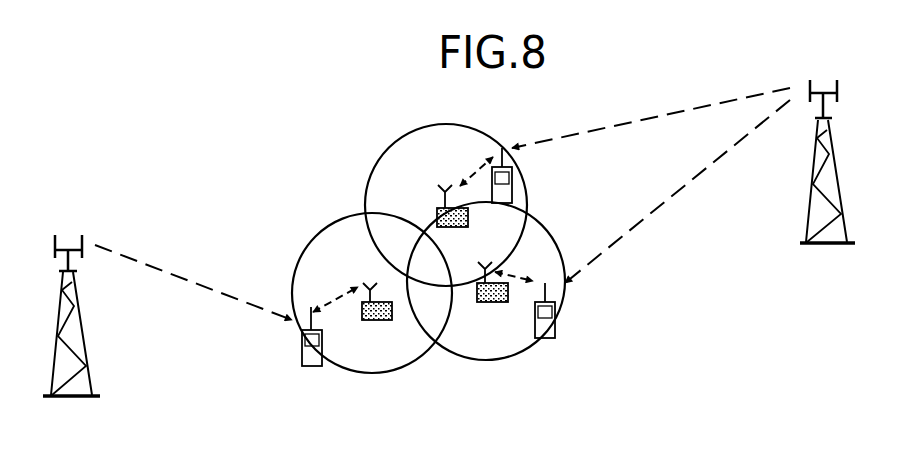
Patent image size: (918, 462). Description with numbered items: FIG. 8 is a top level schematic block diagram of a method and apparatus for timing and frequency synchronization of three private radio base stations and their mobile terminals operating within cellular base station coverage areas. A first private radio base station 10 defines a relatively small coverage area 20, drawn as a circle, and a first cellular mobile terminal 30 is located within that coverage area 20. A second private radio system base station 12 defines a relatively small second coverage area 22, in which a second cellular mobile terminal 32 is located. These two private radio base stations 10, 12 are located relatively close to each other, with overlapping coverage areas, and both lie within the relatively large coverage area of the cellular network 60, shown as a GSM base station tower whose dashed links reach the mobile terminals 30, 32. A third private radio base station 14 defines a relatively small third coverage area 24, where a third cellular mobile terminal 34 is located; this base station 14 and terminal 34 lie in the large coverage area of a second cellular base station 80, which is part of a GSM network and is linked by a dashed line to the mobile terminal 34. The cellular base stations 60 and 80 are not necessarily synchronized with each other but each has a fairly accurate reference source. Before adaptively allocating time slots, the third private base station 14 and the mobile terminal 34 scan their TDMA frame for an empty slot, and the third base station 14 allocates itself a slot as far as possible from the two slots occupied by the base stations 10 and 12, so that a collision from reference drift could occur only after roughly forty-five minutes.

The first private radio base station 10 is at (468, 222).
The second private radio system base station 12 is at (507, 302).
The third private radio base station 14 is at (366, 320).
The coverage area 20 is at (471, 148).
The second coverage area 22 is at (546, 247).
The third coverage area 24 is at (362, 364).
The first cellular mobile terminal 30 is at (519, 195).
The second cellular mobile terminal 32 is at (555, 330).
The third cellular mobile terminal 34 is at (302, 363).
The cellular network 60 is at (843, 193).
The second cellular base station 80 is at (85, 345).